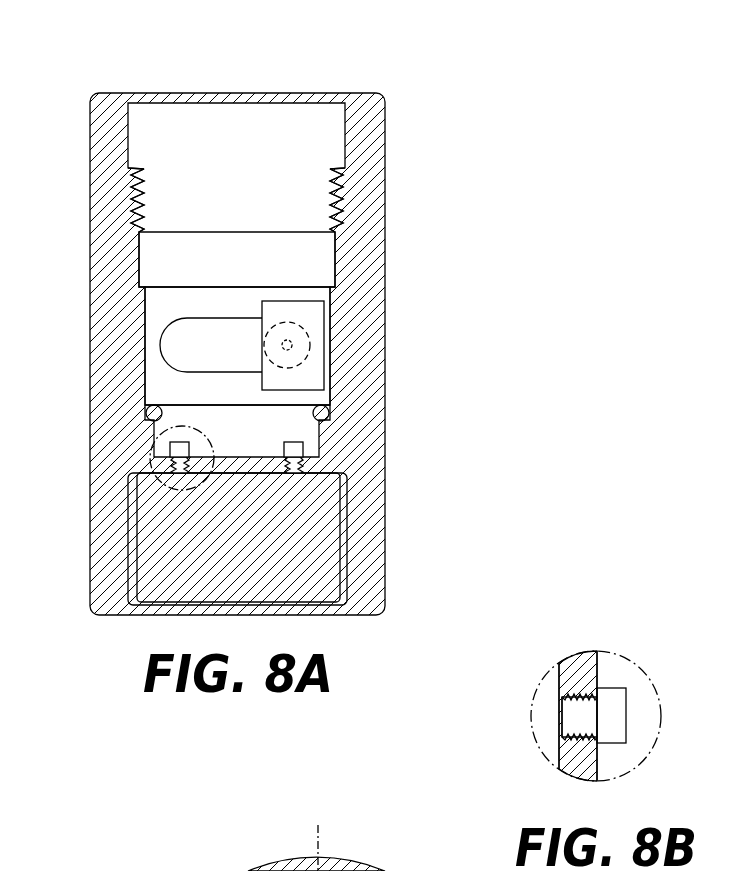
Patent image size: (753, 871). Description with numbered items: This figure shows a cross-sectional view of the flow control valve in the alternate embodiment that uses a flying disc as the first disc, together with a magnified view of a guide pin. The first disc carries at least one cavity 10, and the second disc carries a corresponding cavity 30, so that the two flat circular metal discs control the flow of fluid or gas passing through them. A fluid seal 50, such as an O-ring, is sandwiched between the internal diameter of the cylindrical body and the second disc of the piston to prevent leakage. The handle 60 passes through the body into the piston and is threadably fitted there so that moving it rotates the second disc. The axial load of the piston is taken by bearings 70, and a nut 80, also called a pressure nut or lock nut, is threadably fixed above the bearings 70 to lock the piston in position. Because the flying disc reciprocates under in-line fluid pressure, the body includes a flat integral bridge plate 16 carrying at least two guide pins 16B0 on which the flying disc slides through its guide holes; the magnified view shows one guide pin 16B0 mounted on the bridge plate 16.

In FIG. 8A, the cavity 10 is at (345, 440).
In FIG. 8A, the nut 80 is at (120, 196).
In FIG. 8A, the bearings 70 is at (350, 262).
In FIG. 8A, the cavity 30 is at (118, 354).
In FIG. 8A, the handle 60 is at (333, 368).
In FIG. 8A, the fluid seal 50 is at (116, 411).
In FIG. 8A, the bridge plate 16 is at (293, 477).
In FIG. 8A, the guide pins 16B0 is at (280, 452).
In FIG. 8B, the guide pins 16B0 is at (627, 708).